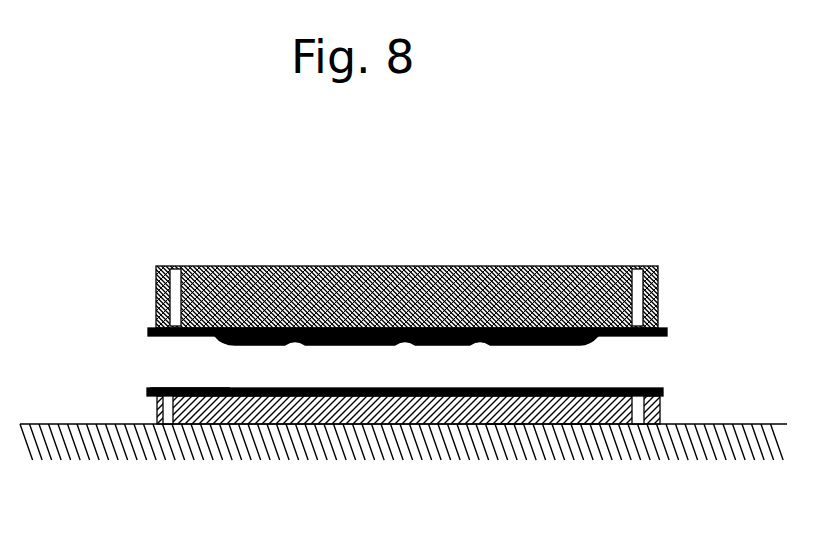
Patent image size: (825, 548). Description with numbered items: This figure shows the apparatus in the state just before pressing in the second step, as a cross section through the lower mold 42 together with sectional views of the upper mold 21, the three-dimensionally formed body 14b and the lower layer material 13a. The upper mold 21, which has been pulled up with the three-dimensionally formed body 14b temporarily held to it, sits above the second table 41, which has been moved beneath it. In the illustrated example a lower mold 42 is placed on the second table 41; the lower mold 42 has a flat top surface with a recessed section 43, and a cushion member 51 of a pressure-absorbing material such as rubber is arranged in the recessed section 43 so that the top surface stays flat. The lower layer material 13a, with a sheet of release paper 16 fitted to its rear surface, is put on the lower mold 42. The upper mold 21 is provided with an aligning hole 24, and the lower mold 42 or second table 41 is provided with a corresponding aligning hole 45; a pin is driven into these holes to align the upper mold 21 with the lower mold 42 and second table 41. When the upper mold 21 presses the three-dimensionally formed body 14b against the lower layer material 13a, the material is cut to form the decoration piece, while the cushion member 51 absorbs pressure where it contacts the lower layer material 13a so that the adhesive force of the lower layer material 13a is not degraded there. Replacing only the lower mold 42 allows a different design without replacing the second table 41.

The upper mold 21 is at (362, 286).
The aligning hole 24 is at (177, 283).
The three-dimensionally formed body 14b is at (668, 328).
The lower layer material 13a is at (663, 387).
The release paper 16 is at (664, 392).
The recessed section 43 is at (213, 388).
The aligning hole 45 is at (172, 417).
The second table 41 is at (351, 455).
The lower mold 42 is at (575, 440).
The cushion member 51 is at (504, 440).